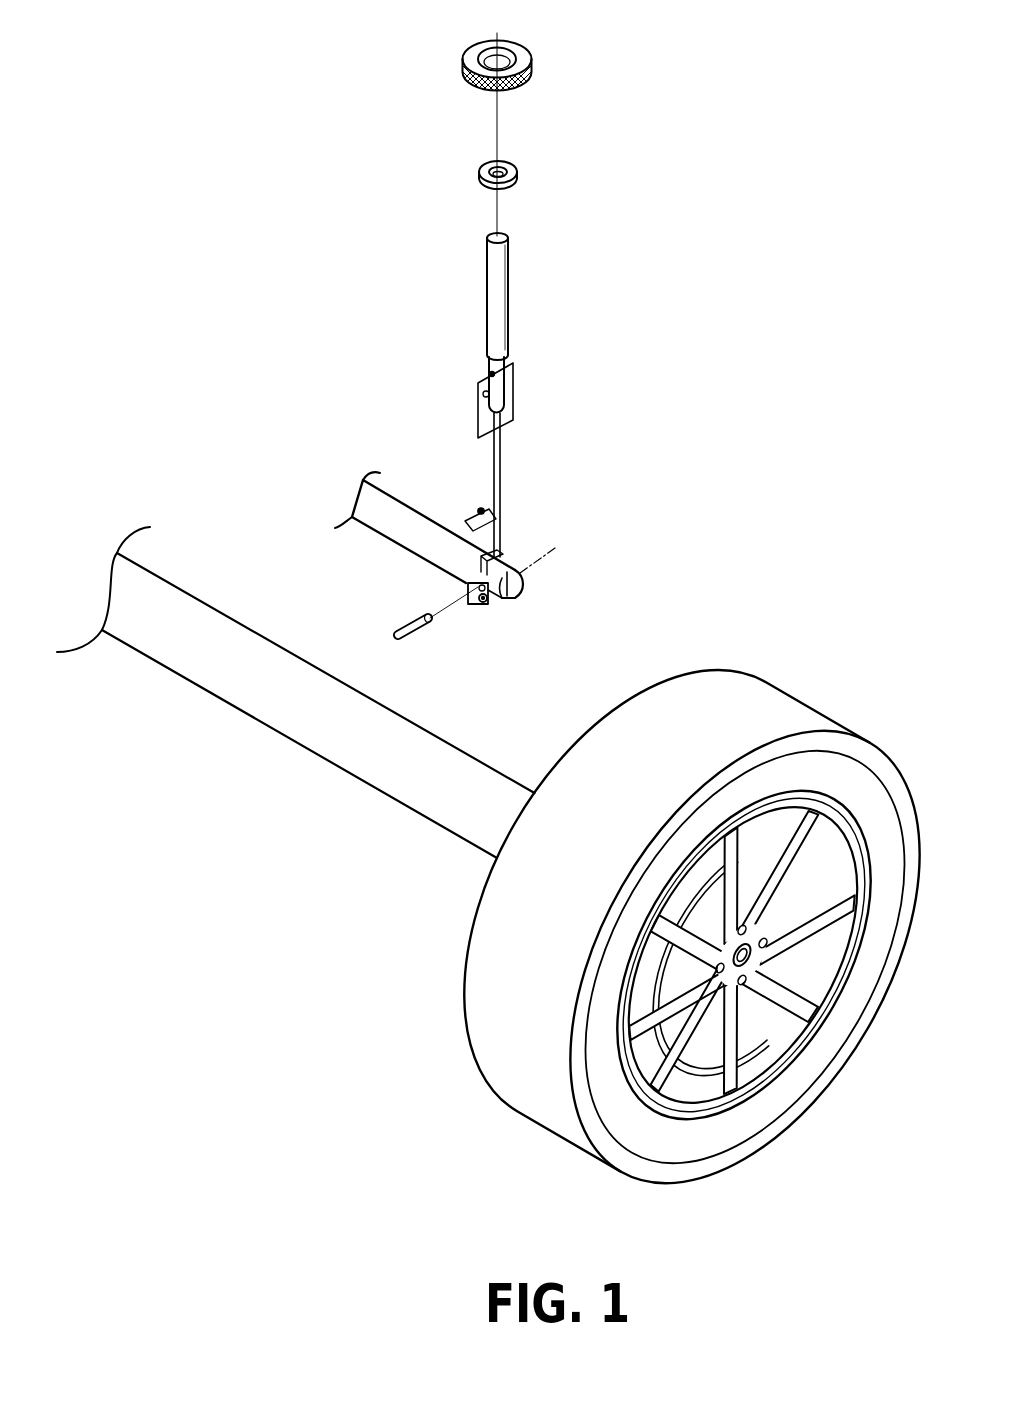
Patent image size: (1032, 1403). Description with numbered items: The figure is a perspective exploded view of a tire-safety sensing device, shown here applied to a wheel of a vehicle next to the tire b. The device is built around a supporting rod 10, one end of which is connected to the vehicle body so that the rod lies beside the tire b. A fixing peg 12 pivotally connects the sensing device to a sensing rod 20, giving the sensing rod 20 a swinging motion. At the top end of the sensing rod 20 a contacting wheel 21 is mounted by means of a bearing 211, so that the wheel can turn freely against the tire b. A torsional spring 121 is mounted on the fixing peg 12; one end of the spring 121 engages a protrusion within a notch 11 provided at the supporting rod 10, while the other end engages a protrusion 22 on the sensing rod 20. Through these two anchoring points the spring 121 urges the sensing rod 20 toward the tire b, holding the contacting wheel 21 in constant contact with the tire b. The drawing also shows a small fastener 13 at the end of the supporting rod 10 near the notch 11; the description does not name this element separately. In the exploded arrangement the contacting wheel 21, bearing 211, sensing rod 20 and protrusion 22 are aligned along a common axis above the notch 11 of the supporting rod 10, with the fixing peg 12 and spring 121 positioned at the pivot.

The supporting rod 10 is at (390, 517).
The notch 11 is at (522, 583).
The fixing peg 12 is at (418, 633).
The screw 13 is at (485, 603).
The spring 121 is at (488, 512).
The sensing rod 20 is at (498, 302).
The contacting wheel 21 is at (522, 60).
The bearing 211 is at (518, 173).
The protrusion 22 is at (504, 372).
The tire b is at (777, 710).